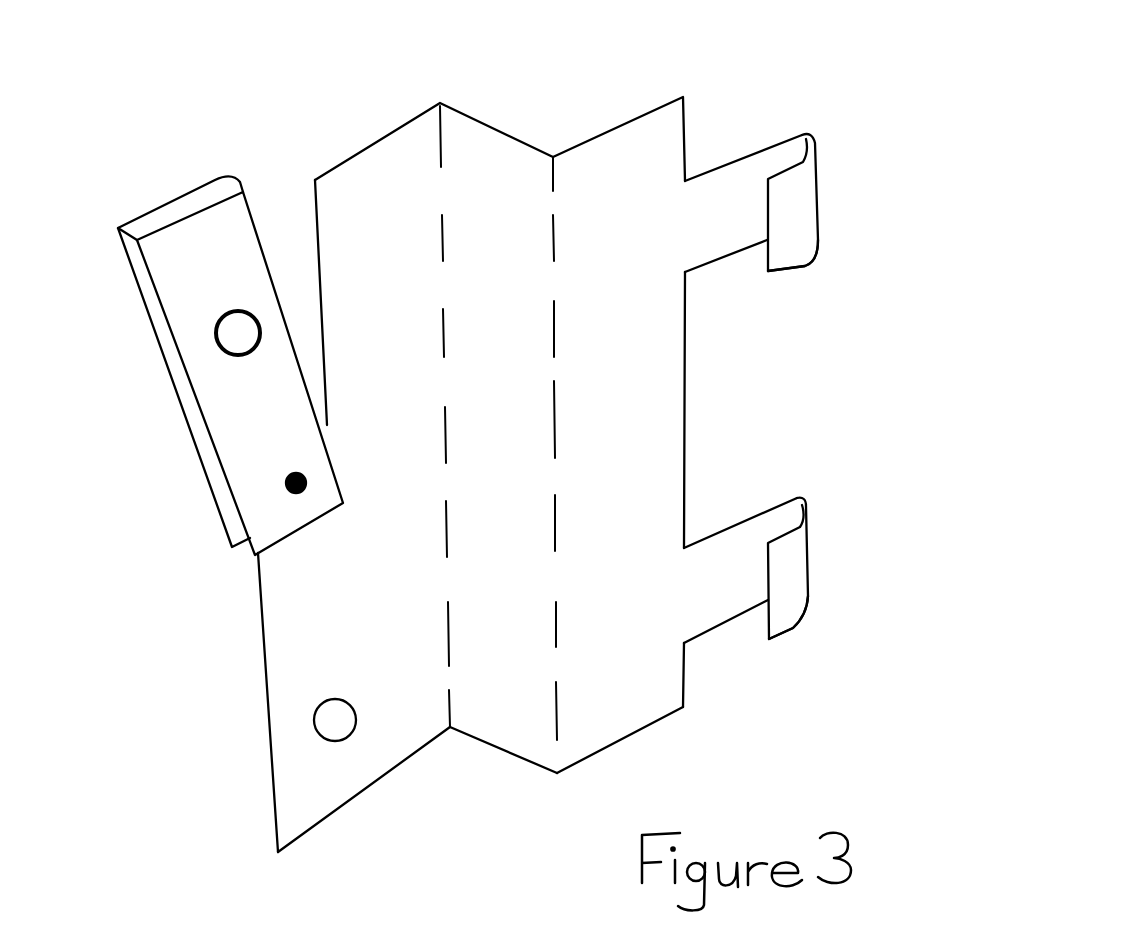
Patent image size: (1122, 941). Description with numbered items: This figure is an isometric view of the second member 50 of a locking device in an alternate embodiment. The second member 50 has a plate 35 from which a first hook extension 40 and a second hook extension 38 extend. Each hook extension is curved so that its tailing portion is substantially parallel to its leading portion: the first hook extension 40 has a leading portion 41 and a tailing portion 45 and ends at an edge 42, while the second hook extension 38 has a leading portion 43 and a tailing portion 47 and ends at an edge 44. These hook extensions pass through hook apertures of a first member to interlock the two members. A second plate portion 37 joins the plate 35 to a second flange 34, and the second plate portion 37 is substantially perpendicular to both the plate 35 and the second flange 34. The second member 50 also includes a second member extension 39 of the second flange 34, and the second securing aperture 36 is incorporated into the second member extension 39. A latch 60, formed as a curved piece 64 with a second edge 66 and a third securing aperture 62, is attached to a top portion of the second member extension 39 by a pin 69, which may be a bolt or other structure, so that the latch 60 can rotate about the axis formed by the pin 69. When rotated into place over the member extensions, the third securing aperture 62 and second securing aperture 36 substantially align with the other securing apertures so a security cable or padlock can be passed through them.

The second member 50 is at (710, 60).
The second flange 34 is at (400, 807).
The plate 35 is at (660, 755).
The second securing aperture 36 is at (323, 725).
The second plate portion 37 is at (483, 807).
The second hook extension 38 is at (733, 654).
The second member extension 39 is at (274, 611).
The first hook extension 40 is at (724, 300).
The leading portion 41 is at (733, 177).
The edge 42 is at (769, 223).
The leading portion 43 is at (742, 531).
The edge 44 is at (771, 594).
The tailing portion 45 is at (795, 251).
The tailing portion 47 is at (795, 618).
The latch 60 is at (217, 343).
The third securing aperture 62 is at (228, 342).
The curved piece 64 is at (277, 168).
The second edge 66 is at (167, 310).
The pin 69 is at (343, 470).